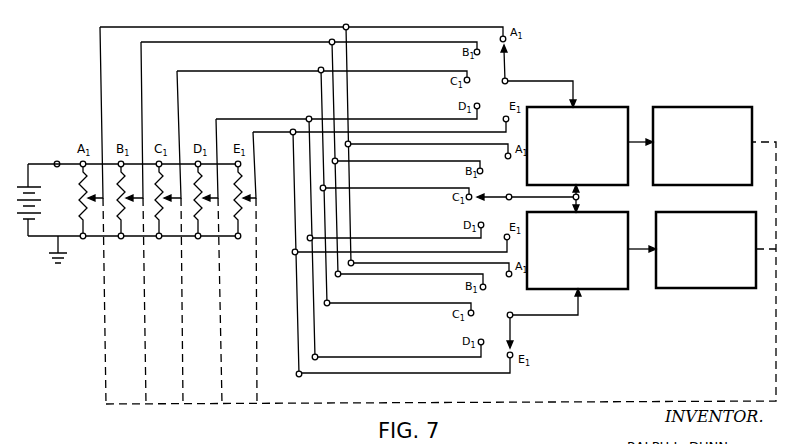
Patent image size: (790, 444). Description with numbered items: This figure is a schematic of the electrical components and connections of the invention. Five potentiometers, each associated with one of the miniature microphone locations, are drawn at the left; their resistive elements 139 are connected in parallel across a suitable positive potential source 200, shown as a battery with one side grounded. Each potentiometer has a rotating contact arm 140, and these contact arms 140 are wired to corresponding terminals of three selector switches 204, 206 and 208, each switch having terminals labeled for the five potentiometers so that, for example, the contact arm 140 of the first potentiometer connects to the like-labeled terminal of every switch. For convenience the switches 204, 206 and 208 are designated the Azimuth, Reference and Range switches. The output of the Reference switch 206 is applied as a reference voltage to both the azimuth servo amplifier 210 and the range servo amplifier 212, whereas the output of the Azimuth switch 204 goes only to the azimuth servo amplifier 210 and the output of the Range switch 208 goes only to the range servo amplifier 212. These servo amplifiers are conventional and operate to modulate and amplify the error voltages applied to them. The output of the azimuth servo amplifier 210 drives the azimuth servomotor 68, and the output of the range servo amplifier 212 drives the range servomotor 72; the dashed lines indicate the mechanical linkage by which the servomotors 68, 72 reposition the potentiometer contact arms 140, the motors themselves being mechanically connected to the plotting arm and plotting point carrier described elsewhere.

The resistive elements 139 is at (92, 200).
The rotating contact arms 140 is at (256, 203).
The positive potential source 200 is at (24, 222).
The Azimuth switch 204 is at (510, 80).
The Reference switch 206 is at (508, 200).
The Range switch 208 is at (512, 318).
The azimuth servo amplifier 210 is at (597, 106).
The range servo amplifier 212 is at (592, 289).
The azimuth servomotor 68 is at (700, 106).
The range servomotor 72 is at (707, 289).